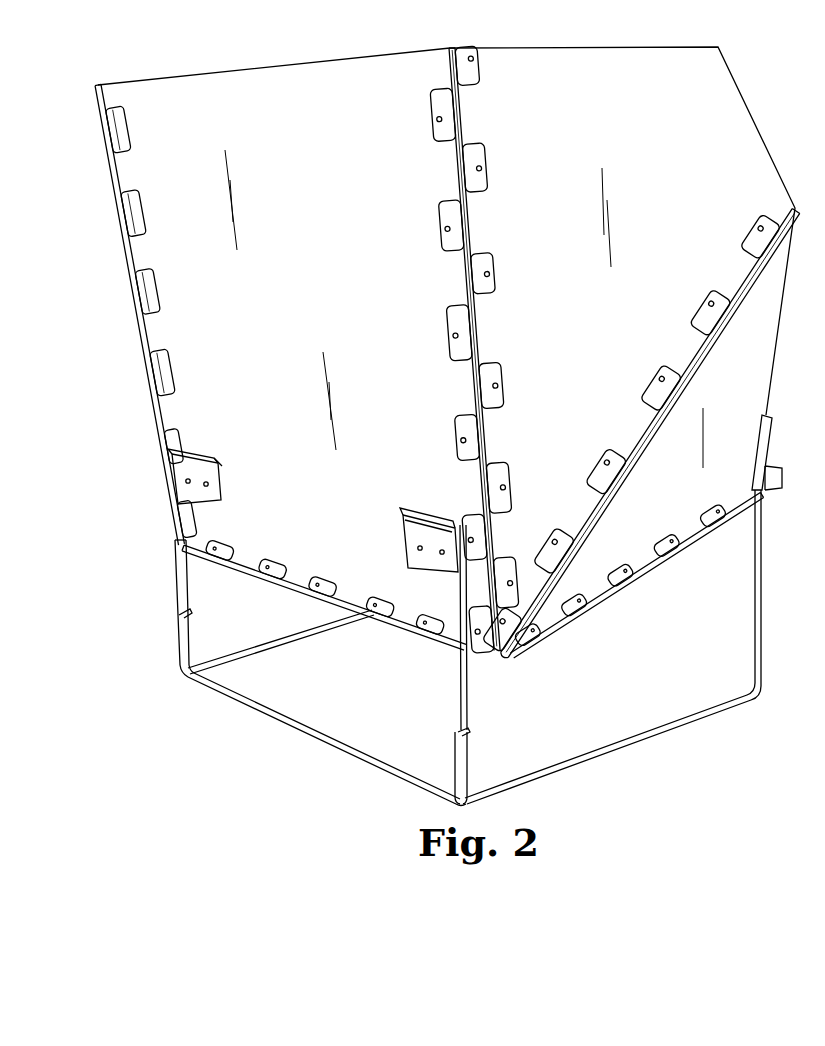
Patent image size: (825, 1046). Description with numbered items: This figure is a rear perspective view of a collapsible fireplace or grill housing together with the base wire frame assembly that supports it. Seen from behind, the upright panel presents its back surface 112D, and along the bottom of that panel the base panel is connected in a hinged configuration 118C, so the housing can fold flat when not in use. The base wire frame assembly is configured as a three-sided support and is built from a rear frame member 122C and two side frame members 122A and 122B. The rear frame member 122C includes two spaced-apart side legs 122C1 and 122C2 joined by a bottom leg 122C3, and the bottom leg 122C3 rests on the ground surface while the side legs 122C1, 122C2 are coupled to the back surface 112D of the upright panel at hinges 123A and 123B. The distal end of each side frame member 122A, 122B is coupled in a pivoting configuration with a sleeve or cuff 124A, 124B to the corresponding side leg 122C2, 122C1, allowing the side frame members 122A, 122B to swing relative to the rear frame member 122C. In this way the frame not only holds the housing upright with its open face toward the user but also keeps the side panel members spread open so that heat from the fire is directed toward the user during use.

The back surface 112D is at (181, 340).
The hinge 123B is at (165, 449).
The hinge 123A is at (420, 517).
The side leg 122C1 is at (176, 580).
The side frame member 122B is at (264, 645).
The sleeve or cuff 124B is at (181, 648).
The bottom leg 122C3 is at (280, 722).
The rear frame member 122C is at (331, 667).
The hinge 118C is at (376, 620).
The side leg 122C2 is at (469, 690).
The sleeve or cuff 124A is at (462, 760).
The side frame member 122A is at (738, 699).